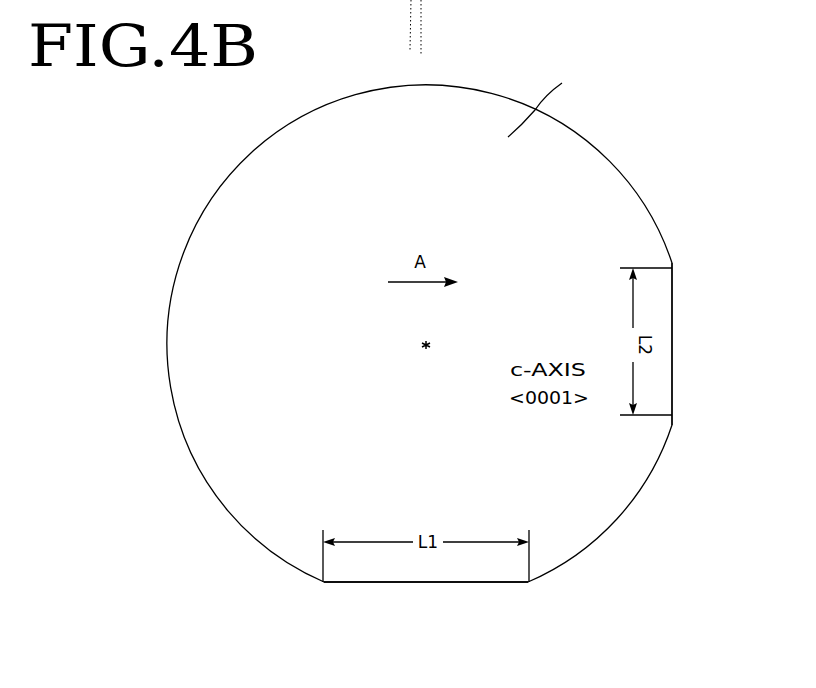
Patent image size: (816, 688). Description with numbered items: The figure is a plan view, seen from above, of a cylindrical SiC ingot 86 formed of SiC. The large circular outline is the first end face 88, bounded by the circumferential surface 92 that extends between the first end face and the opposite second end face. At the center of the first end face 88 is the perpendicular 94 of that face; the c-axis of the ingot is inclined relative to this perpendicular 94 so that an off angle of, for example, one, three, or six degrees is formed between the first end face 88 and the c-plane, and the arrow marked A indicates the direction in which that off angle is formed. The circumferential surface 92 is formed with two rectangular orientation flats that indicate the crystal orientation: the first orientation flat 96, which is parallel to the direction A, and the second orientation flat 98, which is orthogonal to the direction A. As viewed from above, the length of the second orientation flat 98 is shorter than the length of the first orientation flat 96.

The SiC ingot 86 is at (209, 203).
The first end face 88 is at (542, 98).
The circumferential surface 92 is at (617, 165).
The perpendicular of the first end face 94 is at (505, 372).
The first orientation flat 96 is at (470, 582).
The second orientation flat 98 is at (672, 340).